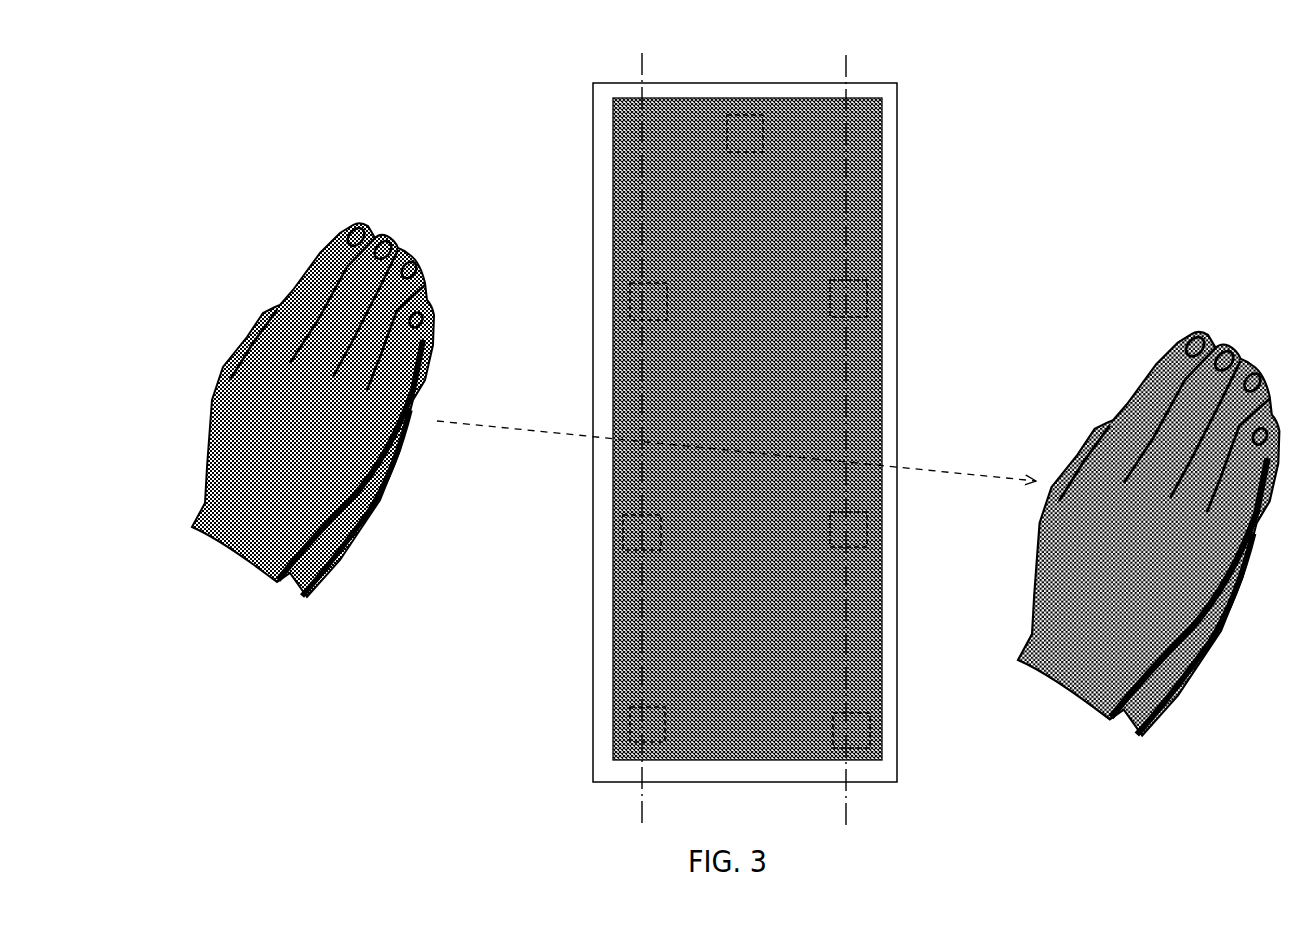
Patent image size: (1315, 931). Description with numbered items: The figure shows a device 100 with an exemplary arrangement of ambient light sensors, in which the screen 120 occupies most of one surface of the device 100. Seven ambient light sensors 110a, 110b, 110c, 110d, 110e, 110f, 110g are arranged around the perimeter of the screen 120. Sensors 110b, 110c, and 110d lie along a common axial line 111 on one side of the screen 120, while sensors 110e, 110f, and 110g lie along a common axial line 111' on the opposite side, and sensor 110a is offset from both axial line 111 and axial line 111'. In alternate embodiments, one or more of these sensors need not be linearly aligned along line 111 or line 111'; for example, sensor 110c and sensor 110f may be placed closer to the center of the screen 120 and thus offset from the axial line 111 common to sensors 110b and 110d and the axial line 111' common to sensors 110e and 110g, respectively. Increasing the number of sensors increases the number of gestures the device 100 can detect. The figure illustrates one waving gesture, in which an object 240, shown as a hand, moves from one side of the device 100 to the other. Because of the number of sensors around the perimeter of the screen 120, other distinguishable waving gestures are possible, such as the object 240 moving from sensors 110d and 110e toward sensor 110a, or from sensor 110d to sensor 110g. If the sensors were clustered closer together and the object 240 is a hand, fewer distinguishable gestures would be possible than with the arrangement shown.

The device 100 is at (563, 110).
The common axial line 111 is at (649, 417).
The common axial line 111' is at (854, 423).
The ambient light sensor 110a is at (762, 132).
The ambient light sensor 110b is at (630, 303).
The ambient light sensor 110c is at (623, 535).
The ambient light sensor 110d is at (630, 723).
The ambient light sensor 110e is at (870, 740).
The ambient light sensor 110f is at (867, 528).
The ambient light sensor 110g is at (867, 298).
The screen 120 is at (807, 406).
The object 240 is at (297, 298).